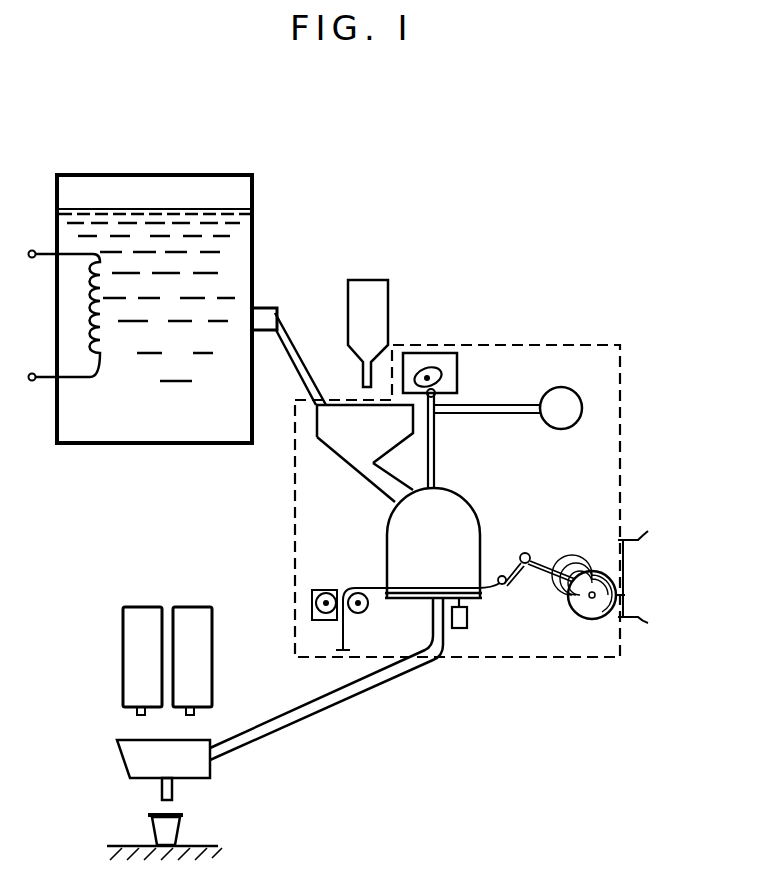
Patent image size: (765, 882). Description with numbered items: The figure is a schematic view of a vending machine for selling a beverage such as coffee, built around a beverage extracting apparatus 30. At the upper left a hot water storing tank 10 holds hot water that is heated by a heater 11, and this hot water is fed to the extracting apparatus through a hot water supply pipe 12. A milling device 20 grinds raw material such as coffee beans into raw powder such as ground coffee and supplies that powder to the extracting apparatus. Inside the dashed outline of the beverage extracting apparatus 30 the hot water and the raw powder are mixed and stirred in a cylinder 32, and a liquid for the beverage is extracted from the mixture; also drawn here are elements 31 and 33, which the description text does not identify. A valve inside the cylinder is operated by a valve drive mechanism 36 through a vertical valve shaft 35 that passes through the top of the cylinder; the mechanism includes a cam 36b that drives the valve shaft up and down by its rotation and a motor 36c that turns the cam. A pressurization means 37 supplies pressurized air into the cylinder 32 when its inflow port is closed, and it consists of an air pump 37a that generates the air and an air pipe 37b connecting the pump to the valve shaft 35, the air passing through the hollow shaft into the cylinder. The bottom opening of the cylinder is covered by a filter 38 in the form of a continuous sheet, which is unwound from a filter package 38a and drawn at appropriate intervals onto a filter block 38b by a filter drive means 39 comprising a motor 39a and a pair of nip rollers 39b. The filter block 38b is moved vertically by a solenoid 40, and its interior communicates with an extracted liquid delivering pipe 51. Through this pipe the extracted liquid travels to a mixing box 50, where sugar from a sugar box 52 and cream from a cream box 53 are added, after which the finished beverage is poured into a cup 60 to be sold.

The hot water storing tank 10 is at (155, 175).
The heater 11 is at (100, 372).
The hot water supply pipe 12 is at (293, 348).
The milling device 20 is at (370, 280).
The beverage extracting apparatus 30 is at (628, 316).
The receiving hopper 31 is at (332, 452).
The cylinder 32 is at (483, 550).
The chute 33 is at (385, 492).
The valve shaft 35 is at (437, 468).
The valve drive mechanism 36 is at (461, 356).
The cam 36b is at (437, 392).
The motor 36c is at (447, 369).
The pressurization means 37 is at (520, 417).
The air pump 37a is at (531, 418).
The air pipe 37b is at (487, 415).
The filter 38 is at (495, 590).
The filter package 38a is at (600, 577).
The filter block 38b is at (480, 597).
The filter drive means 39 is at (332, 598).
The motor 39a is at (320, 588).
The nip rollers 39b is at (378, 616).
The solenoid 40 is at (466, 618).
The mixing box 50 is at (212, 775).
The extracted liquid delivering pipe 51 is at (357, 697).
The sugar box 52 is at (142, 607).
The cream box 53 is at (192, 607).
The cup 60 is at (184, 826).